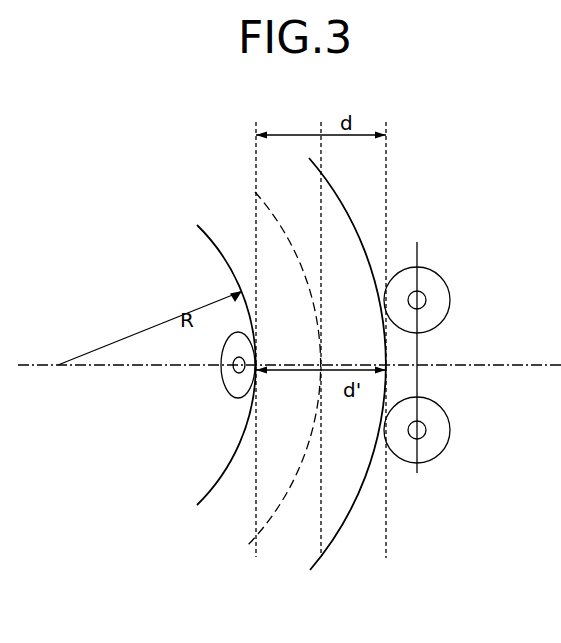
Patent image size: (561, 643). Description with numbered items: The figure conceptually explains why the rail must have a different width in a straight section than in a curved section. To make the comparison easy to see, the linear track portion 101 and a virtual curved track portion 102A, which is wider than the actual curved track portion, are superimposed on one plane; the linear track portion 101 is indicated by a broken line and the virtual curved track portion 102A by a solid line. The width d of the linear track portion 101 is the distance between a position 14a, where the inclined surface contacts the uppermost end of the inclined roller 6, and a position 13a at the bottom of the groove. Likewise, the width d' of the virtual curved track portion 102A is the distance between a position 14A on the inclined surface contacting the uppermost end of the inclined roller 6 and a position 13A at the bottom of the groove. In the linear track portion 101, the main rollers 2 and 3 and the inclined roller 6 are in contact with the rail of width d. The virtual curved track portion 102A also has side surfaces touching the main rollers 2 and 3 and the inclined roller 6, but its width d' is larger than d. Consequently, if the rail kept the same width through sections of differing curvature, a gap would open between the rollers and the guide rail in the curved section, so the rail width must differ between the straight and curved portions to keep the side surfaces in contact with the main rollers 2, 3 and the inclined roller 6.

The position of the inclined surface in contact with the uppermost end of the inclin 14A is at (215, 245).
The virtual curved track portion 102A is at (256, 192).
The position that is a bottom portion of the groove 13A is at (352, 217).
The position of the inclined surface in contact with the uppermost end of the inclin 14a is at (257, 512).
The linear track portion 101 is at (322, 538).
The position that is a bottom portion of the groove 13a is at (387, 528).
The main roller 2 is at (451, 298).
The main roller 3 is at (451, 428).
The inclined roller 6 is at (223, 383).